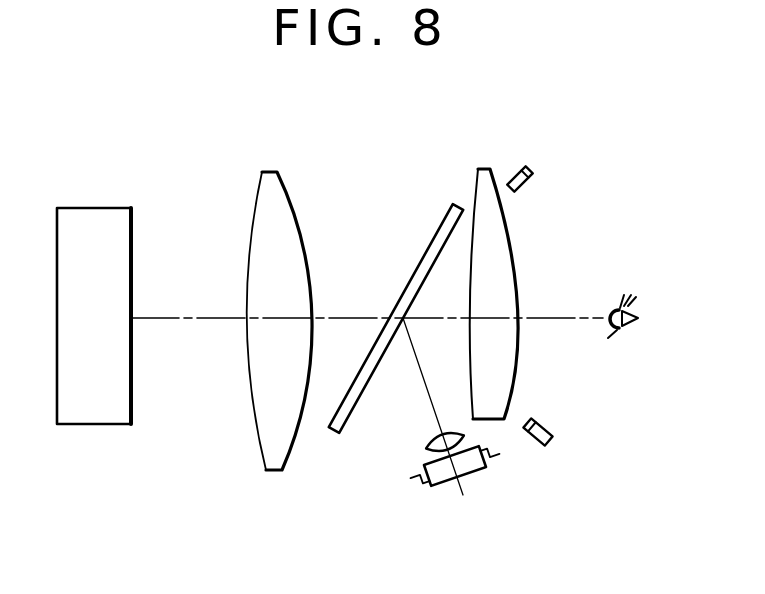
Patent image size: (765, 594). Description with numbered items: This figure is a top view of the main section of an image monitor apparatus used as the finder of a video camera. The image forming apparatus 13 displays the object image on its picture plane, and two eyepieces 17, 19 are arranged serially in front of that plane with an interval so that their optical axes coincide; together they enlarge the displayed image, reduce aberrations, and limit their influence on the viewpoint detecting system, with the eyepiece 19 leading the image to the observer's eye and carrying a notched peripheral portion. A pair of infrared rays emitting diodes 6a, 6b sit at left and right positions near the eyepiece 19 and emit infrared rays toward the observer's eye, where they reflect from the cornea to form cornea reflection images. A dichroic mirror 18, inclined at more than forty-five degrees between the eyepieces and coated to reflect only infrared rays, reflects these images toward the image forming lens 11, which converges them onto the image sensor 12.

The image forming apparatus 13 is at (91, 208).
The eyepiece 17 is at (288, 191).
The dichroic mirror 18 is at (438, 227).
The eyepiece 19 is at (512, 240).
The infrared rays emitting diode 6a is at (552, 428).
The infrared rays emitting diode 6b is at (535, 178).
The image forming lens 11 is at (423, 446).
The image sensor 12 is at (442, 486).